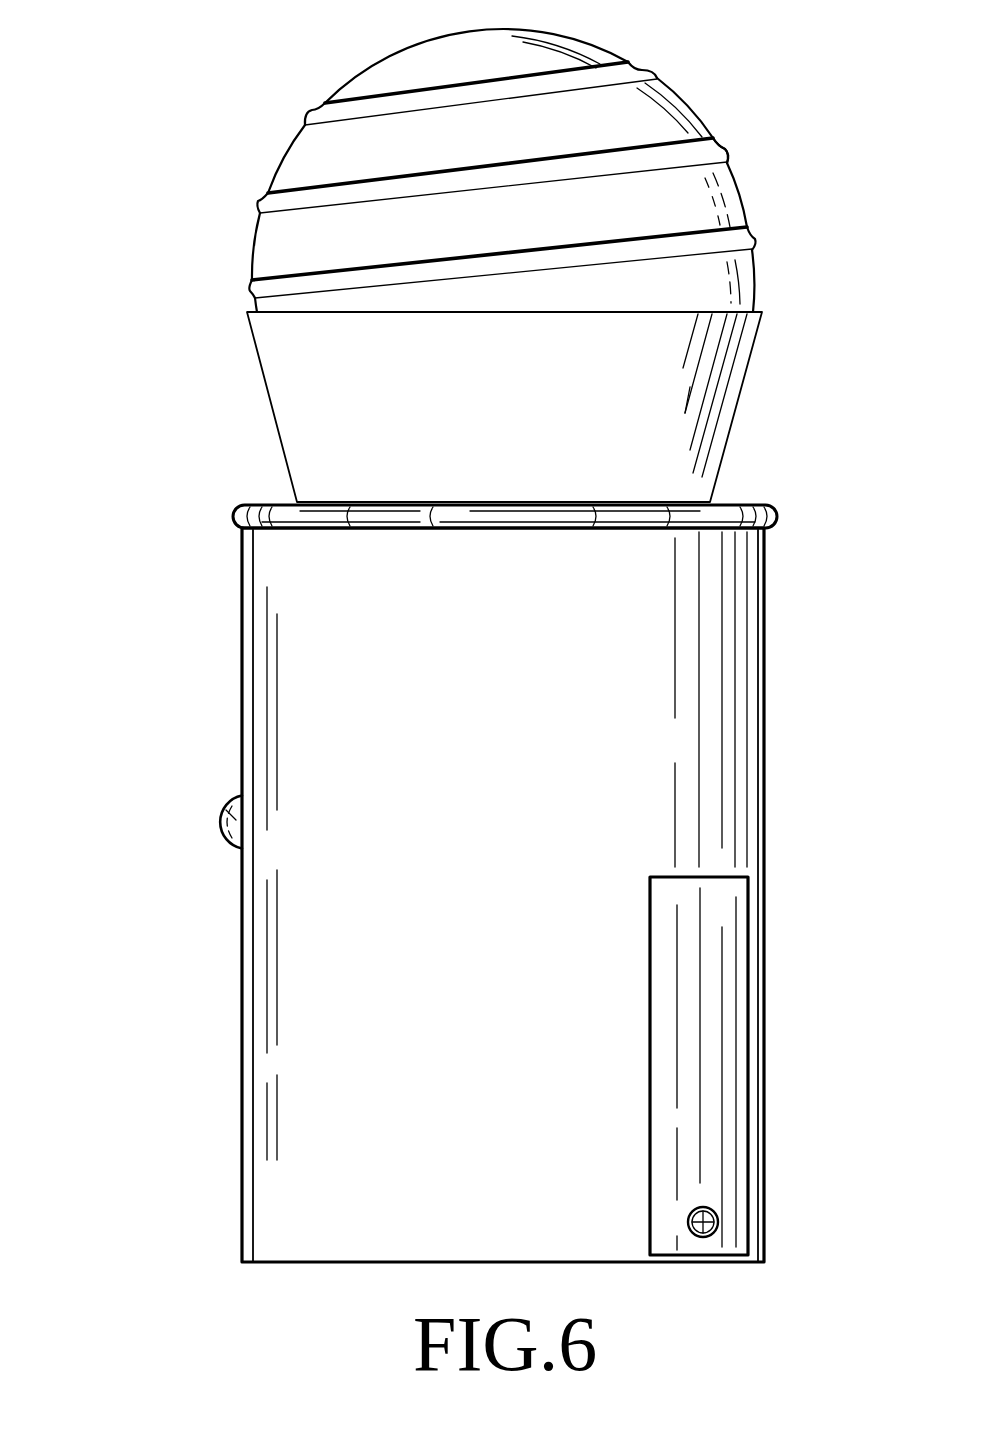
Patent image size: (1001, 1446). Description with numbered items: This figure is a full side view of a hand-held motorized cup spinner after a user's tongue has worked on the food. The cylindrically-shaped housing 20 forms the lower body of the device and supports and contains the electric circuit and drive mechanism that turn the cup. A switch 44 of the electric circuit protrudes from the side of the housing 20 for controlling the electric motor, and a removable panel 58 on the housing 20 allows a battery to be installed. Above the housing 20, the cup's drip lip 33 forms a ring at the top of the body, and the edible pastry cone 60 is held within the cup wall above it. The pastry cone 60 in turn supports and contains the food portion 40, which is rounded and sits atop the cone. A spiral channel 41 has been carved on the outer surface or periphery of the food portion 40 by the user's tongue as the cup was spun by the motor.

The housing 20 is at (300, 578).
The drip lip 33 is at (755, 518).
The food portion 40 is at (318, 165).
The spiral channel 41 is at (717, 143).
The switch 44 is at (230, 820).
The removable panel 58 is at (710, 1067).
The pastry cone 60 is at (288, 402).